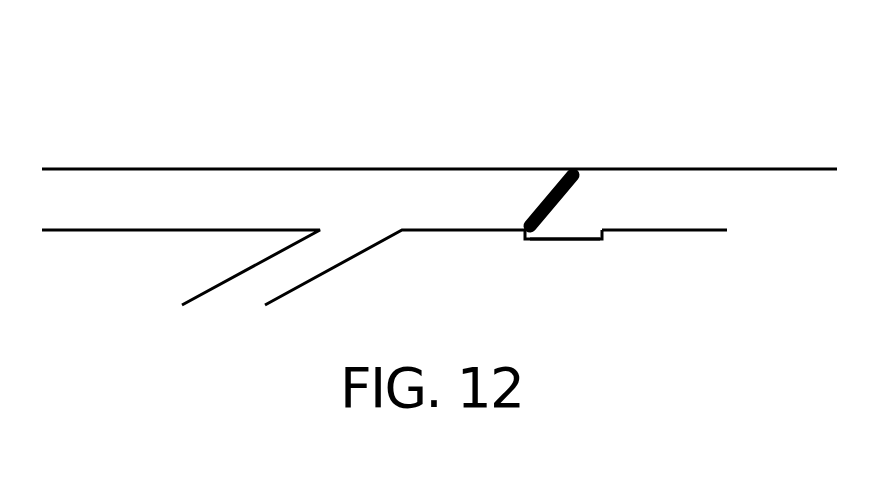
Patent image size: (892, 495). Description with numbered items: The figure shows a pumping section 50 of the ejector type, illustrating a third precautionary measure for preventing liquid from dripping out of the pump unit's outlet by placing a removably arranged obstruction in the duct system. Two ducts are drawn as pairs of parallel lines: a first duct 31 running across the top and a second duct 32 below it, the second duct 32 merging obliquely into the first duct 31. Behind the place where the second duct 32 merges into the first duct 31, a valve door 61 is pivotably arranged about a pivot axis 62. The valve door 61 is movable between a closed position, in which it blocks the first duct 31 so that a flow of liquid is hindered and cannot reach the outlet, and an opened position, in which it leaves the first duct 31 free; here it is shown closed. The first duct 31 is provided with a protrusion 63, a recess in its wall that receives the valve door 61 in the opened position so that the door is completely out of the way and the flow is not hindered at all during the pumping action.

The first duct 31 is at (214, 186).
The second duct 32 is at (305, 270).
The pumping section 50 is at (402, 138).
The valve door 61 is at (542, 198).
The pivot axis 62 is at (525, 235).
The protrusion 63 is at (577, 235).